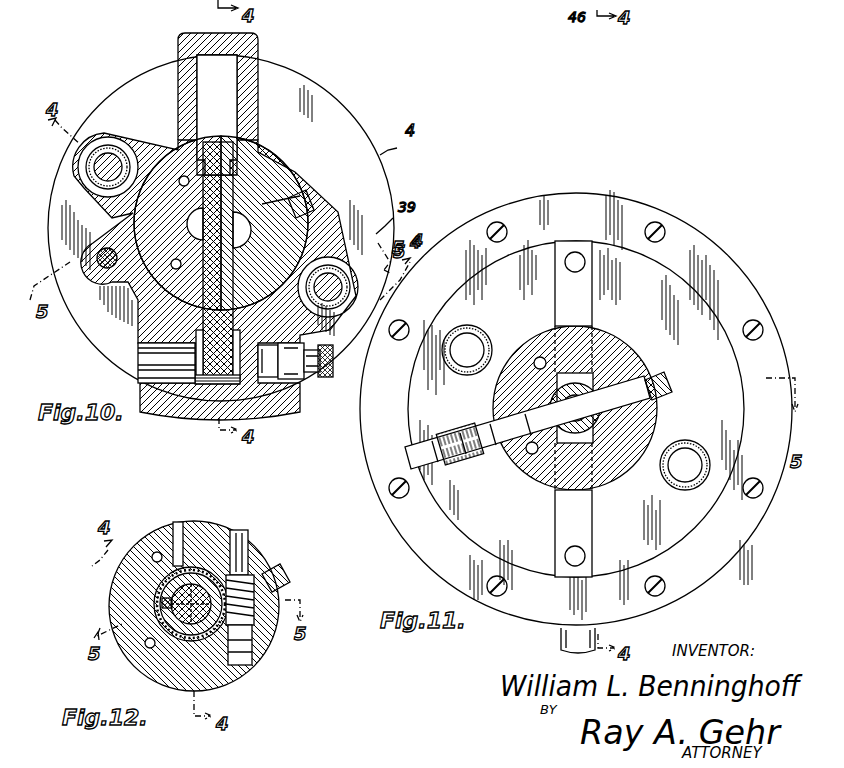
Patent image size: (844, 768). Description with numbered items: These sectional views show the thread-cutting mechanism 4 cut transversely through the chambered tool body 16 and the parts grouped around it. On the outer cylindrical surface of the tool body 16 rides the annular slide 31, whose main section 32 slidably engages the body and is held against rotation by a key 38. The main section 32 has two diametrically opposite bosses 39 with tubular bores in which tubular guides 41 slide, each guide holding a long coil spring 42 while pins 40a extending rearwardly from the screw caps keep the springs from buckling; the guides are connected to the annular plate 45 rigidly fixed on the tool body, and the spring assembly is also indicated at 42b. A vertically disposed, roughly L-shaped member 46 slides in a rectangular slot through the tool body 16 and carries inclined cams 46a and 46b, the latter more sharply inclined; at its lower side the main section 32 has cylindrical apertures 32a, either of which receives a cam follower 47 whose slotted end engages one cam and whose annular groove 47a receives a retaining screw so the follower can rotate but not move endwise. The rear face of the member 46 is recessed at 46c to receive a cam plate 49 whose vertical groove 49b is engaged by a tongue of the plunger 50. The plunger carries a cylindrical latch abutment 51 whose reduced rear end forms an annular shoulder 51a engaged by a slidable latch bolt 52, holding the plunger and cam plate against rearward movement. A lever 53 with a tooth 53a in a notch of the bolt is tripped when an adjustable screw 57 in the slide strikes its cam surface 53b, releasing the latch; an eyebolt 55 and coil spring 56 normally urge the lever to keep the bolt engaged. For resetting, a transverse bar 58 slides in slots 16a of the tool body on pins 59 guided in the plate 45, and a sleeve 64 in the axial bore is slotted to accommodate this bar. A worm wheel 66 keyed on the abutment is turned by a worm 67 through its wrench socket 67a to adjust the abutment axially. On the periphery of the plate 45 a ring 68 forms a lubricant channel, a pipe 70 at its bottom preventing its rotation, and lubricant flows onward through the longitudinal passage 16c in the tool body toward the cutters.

In FIG. 11, the thread-cutting mechanism 4 is at (740, 585).
In FIG. 10, the tool body 16 is at (176, 158).
In FIG. 11, the tool body 16 is at (608, 350).
In FIG. 12, the tool body 16 is at (184, 528).
In FIG. 11, the slots 16a is at (632, 485).
In FIG. 10, the longitudinal passage 16c is at (140, 290).
In FIG. 11, the longitudinal passage 16c is at (545, 480).
In FIG. 12, the longitudinal passage 16c is at (125, 568).
In FIG. 10, the annular slide 31 is at (333, 108).
In FIG. 10, the main section 32 is at (290, 170).
In FIG. 10, the cylindrical apertures 32a is at (275, 325).
In FIG. 10, the key 38 is at (315, 200).
In FIG. 11, the key 38 is at (670, 378).
In FIG. 12, the key 38 is at (290, 574).
In FIG. 10, the bosses 39 is at (75, 168).
In FIG. 10, the pins 40a is at (312, 300).
In FIG. 10, the tubular guides 41 is at (106, 140).
In FIG. 11, the tubular guides 41 is at (472, 330).
In FIG. 10, the coil springs 42 is at (118, 150).
In FIG. 11, the coil springs 42 is at (484, 350).
In FIG. 10, the bearing 42b is at (345, 262).
In FIG. 11, the annular plate 45 is at (690, 300).
In FIG. 10, the bar or plate member 46 is at (200, 330).
In FIG. 10, the inclined cam 46a is at (236, 380).
In FIG. 10, the inclined cam 46b is at (200, 398).
In FIG. 10, the recess 46c is at (205, 285).
In FIG. 10, the cam follower 47 is at (300, 378).
In FIG. 10, the annular groove 47a is at (282, 385).
In FIG. 10, the cam plate 49 is at (221, 223).
In FIG. 10, the vertical groove 49b is at (262, 290).
In FIG. 10, the plunger 50 is at (200, 222).
In FIG. 12, the plunger 50 is at (192, 580).
In FIG. 11, the latch abutment 51 is at (600, 390).
In FIG. 12, the latch abutment 51 is at (188, 632).
In FIG. 11, the annular shoulder 51a is at (612, 410).
In FIG. 11, the latch bolt 52 is at (545, 408).
In FIG. 11, the lever 53 is at (450, 470).
In FIG. 11, the tooth 53a is at (530, 462).
In FIG. 11, the cam surface 53b is at (470, 462).
In FIG. 11, the eyebolt 55 is at (415, 458).
In FIG. 11, the coil spring 56 is at (470, 430).
In FIG. 10, the screw 57 is at (95, 258).
In FIG. 11, the transverse bar 58 is at (592, 300).
In FIG. 11, the pins 59 is at (575, 256).
In FIG. 11, the sleeve 64 is at (610, 392).
In FIG. 12, the worm wheel 66 is at (173, 528).
In FIG. 12, the worm 67 is at (262, 628).
In FIG. 12, the wrench socket 67a is at (248, 545).
In FIG. 11, the ring 68 is at (618, 194).
In FIG. 11, the pipe 70 is at (560, 638).